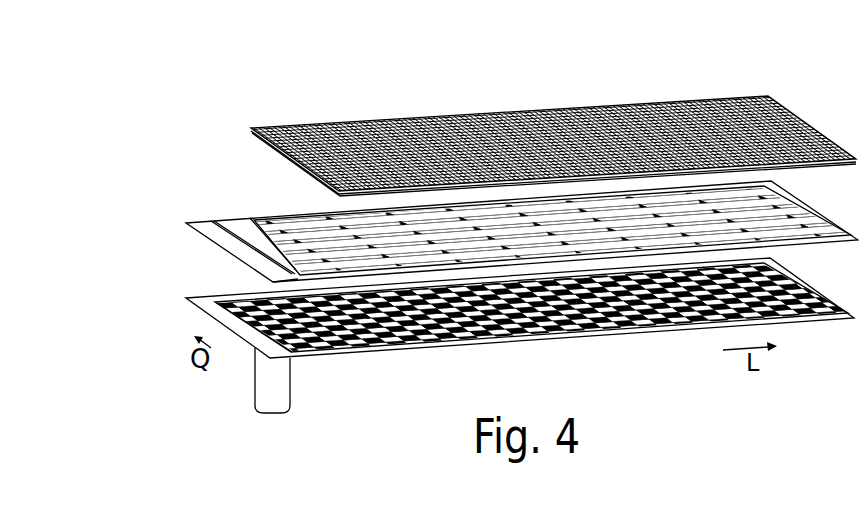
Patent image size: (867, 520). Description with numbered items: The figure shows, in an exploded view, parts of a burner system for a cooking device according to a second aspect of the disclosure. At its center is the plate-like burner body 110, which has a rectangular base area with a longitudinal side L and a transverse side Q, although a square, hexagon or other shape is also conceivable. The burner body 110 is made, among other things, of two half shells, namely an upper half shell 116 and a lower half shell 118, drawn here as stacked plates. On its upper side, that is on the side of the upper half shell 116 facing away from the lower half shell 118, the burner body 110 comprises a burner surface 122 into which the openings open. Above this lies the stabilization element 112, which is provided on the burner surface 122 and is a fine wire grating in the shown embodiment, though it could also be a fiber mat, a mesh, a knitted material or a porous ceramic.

The burner body 110 is at (161, 202).
The stabilization element 112 is at (343, 114).
The upper half shell 116 is at (195, 208).
The lower half shell 118 is at (185, 288).
The burner surface 122 is at (265, 193).